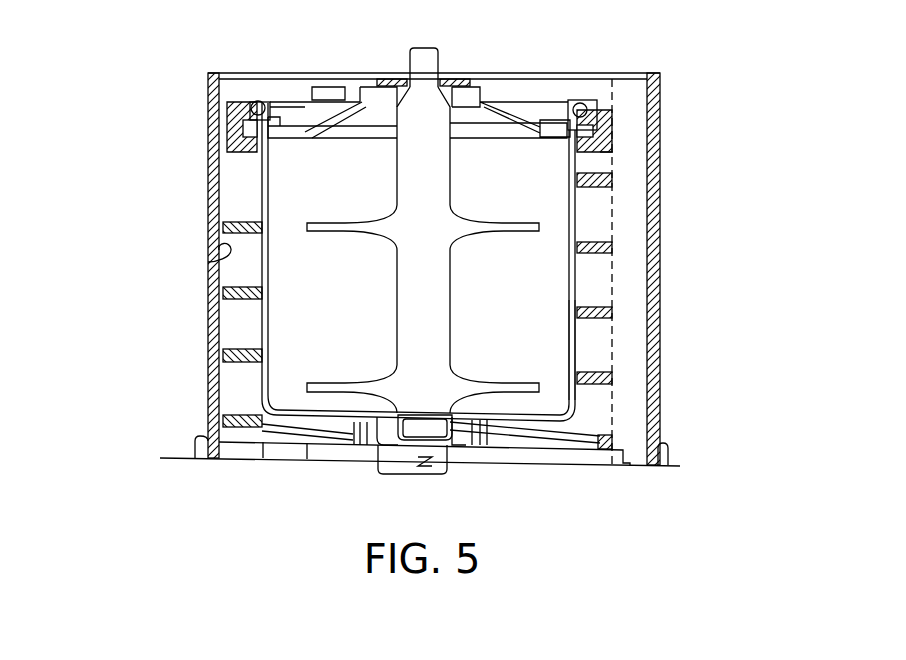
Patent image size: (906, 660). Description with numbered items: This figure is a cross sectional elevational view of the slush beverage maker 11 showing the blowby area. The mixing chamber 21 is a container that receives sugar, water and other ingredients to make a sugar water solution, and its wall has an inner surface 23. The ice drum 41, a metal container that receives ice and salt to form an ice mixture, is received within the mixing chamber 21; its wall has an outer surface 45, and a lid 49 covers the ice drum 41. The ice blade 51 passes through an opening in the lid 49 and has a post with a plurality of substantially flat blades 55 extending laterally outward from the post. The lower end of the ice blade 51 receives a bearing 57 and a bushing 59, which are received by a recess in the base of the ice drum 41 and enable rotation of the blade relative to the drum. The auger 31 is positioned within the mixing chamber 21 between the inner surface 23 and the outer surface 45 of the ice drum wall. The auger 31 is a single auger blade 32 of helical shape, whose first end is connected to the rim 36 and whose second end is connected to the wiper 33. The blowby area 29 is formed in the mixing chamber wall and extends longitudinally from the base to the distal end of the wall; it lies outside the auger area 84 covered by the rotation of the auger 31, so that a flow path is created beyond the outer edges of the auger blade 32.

The slush beverage maker 11 is at (690, 137).
The mixing chamber 21 is at (207, 177).
The inner surface 23 is at (208, 262).
The blowby area 29 is at (612, 196).
The auger 31 is at (613, 247).
The auger blade 32 is at (223, 352).
The wiper 33 is at (590, 430).
The rim 36 is at (630, 93).
The ice drum 41 is at (577, 340).
The outer surface 45 is at (577, 288).
The lid 49 is at (553, 105).
The ice blade 51 is at (455, 50).
The flat blades 55 is at (330, 222).
The bearing 57 is at (470, 418).
The bushing 59 is at (492, 422).
The auger area 84 is at (633, 210).